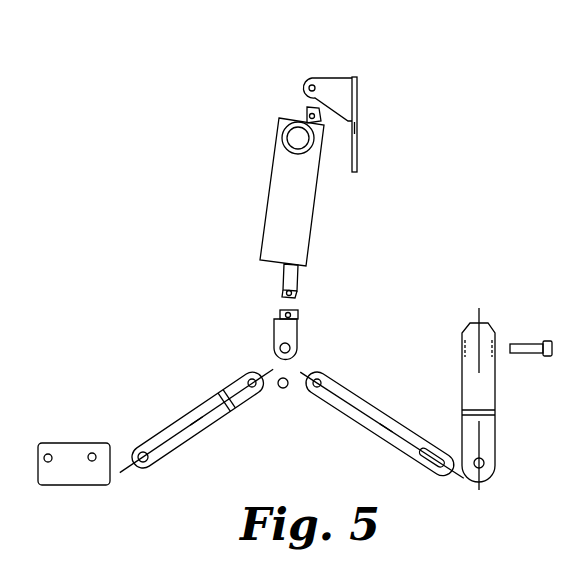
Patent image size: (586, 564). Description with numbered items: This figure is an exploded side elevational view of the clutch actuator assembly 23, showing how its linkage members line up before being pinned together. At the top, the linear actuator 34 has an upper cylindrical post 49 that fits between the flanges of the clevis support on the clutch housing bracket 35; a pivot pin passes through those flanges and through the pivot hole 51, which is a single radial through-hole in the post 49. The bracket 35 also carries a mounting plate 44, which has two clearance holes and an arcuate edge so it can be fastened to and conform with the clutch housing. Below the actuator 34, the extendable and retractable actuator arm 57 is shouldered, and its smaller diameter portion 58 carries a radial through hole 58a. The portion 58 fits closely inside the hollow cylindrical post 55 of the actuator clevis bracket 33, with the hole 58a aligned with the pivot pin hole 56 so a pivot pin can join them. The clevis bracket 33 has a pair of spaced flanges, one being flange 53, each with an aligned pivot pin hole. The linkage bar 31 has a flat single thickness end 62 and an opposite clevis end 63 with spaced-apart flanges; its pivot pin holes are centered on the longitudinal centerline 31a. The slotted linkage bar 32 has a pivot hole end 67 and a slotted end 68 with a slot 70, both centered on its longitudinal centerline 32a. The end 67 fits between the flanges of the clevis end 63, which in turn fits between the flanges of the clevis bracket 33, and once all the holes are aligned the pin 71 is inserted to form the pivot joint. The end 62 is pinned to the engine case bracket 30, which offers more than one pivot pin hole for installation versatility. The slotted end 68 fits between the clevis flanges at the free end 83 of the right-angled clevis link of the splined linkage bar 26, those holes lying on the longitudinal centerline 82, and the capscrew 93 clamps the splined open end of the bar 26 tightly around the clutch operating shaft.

The clutch actuator assembly 23 is at (406, 275).
The splined linkage bar 26 is at (472, 368).
The engine case bracket 30 is at (68, 452).
The linkage bar 31 is at (178, 442).
The longitudinal centerline of linkage bar 31a is at (193, 420).
The slotted linkage bar 32 is at (353, 410).
The longitudinal centerline of slotted linkage bar 32a is at (385, 428).
The actuator clevis bracket 33 is at (279, 330).
The linear actuator 34 is at (280, 188).
The clutch housing bracket 35 is at (340, 86).
The mounting plate 44 is at (358, 153).
The upper cylindrical post 49 is at (306, 108).
The pivot hole 51 is at (306, 113).
The clevis flange 53 is at (292, 338).
The hollow cylindrical post 55 is at (281, 312).
The pivot pin hole 56 is at (294, 313).
The actuator arm 57 is at (297, 276).
The smaller diameter portion 58 is at (283, 292).
The radial through hole 58a is at (300, 292).
The flat single thickness end 62 is at (143, 470).
The clevis end 63 is at (248, 372).
The pivot hole end 67 is at (325, 378).
The slotted end 68 is at (450, 470).
The slot 70 is at (427, 462).
The pin 71 is at (283, 390).
The longitudinal centerline of clevis link 82 is at (479, 398).
The free end 83 is at (487, 435).
The capscrew 93 is at (525, 351).